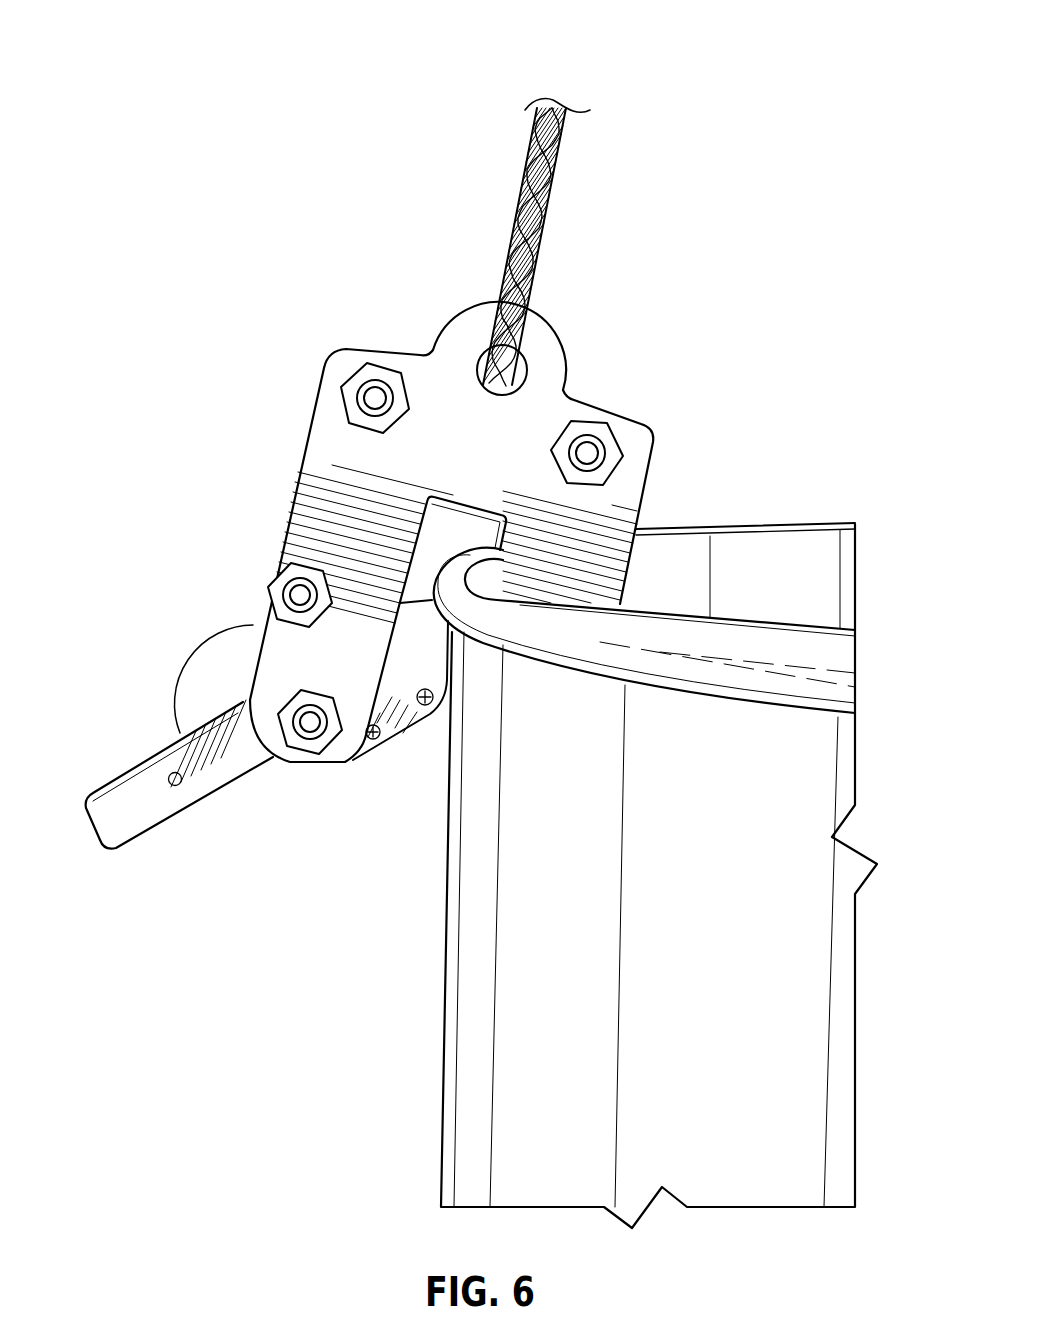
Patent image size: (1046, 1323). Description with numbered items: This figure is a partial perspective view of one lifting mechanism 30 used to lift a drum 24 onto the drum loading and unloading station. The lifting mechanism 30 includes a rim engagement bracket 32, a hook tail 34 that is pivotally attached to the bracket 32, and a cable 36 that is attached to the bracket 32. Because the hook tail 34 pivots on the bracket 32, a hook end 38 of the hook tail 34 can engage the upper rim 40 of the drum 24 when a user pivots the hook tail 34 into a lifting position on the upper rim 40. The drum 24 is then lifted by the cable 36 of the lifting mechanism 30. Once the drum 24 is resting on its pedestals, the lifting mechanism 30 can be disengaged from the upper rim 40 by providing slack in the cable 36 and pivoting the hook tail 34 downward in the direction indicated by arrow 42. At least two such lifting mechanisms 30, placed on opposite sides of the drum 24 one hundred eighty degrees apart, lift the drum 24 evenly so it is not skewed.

The drum 24 is at (741, 864).
The lifting mechanism 30 is at (347, 575).
The rim engagement bracket 32 is at (345, 440).
The hook tail 34 is at (117, 773).
The cable 36 is at (553, 100).
The hook end 38 is at (436, 643).
The upper rim 40 is at (627, 653).
The arrow 42 is at (179, 738).